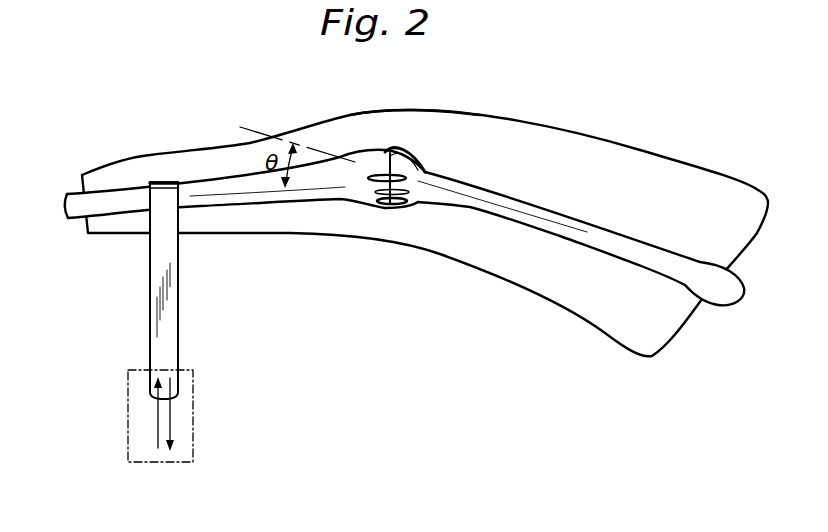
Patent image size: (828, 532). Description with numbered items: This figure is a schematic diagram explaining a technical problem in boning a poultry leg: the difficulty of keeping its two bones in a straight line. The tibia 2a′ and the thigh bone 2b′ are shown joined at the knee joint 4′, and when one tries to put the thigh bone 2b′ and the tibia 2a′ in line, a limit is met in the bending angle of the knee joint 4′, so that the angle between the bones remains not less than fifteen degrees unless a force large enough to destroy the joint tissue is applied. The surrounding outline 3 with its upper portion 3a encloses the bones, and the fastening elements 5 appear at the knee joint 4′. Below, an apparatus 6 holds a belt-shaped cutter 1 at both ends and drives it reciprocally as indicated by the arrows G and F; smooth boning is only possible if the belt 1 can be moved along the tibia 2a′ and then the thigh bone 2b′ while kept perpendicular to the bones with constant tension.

The belt-shaped cutter 1 is at (148, 305).
The tibia 2a′ is at (110, 191).
The thigh bone 2b′ is at (617, 237).
The cast 3 is at (573, 131).
The cast upper portion 3a is at (373, 127).
The knee joint 4′ is at (375, 211).
The fixation members 5 is at (403, 153).
The apparatus 6 is at (128, 418).